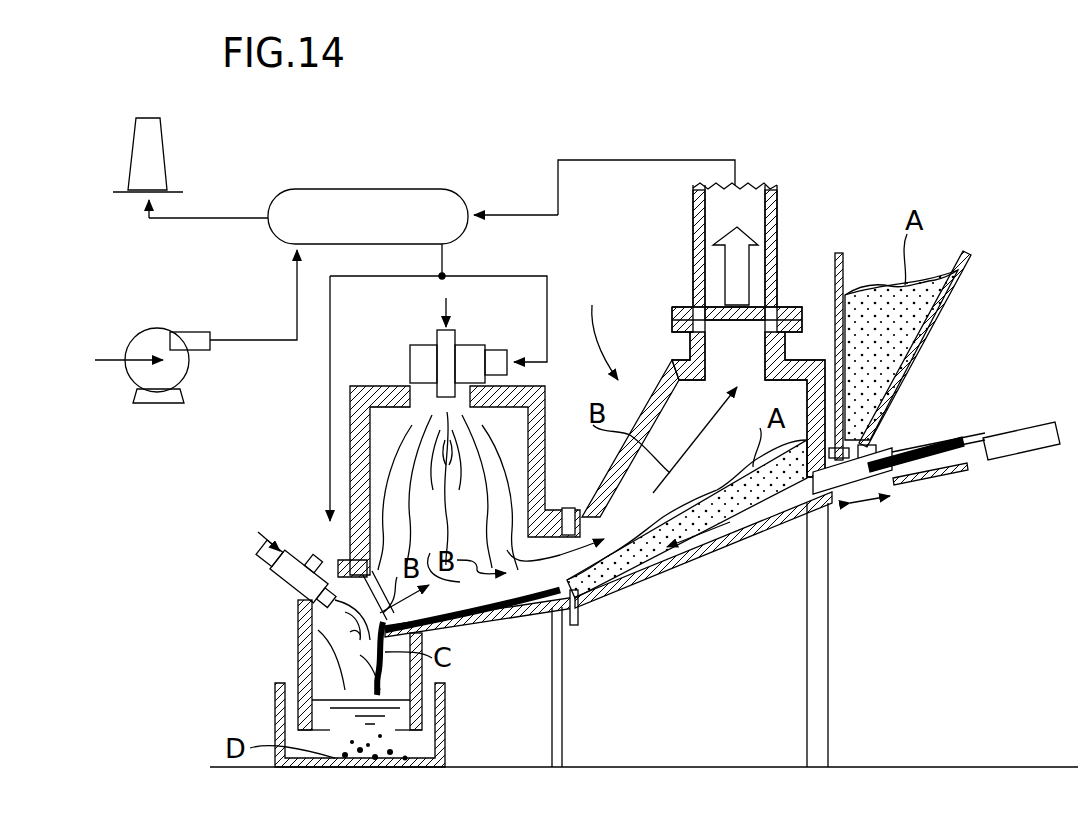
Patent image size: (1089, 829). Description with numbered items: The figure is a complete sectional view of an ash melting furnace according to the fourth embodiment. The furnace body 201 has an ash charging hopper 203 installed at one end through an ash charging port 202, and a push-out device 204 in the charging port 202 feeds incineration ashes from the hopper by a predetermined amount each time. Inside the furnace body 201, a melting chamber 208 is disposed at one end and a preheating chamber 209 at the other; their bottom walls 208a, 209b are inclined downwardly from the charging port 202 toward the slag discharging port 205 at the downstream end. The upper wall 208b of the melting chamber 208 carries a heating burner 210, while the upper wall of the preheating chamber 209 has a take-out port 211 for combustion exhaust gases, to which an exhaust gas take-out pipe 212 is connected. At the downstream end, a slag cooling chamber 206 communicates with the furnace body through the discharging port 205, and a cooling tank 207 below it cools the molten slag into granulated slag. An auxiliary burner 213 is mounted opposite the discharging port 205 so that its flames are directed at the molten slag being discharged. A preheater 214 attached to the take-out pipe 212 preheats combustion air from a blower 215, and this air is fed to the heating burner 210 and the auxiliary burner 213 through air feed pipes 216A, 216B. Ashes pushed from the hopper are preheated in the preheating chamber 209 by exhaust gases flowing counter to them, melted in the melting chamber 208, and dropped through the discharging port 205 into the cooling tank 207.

The furnace body 201 is at (598, 328).
The ash charging port 202 is at (842, 488).
The ash charging hopper 203 is at (945, 297).
The push-out device 204 is at (930, 455).
The slag discharging port 205 is at (438, 632).
The slag cooling chamber 206 is at (320, 658).
The cooling tank 207 is at (448, 712).
The melting chamber 208 is at (486, 537).
The bottom wall of melting chamber 208a is at (523, 617).
The upper wall of melting chamber 208b is at (385, 390).
The preheating chamber 209 is at (712, 548).
The bottom wall of preheating chamber 209b is at (670, 383).
The heating burner 210 is at (432, 330).
The take-out port 211 is at (740, 345).
The exhaust gas take-out pipe 212 is at (779, 197).
The auxiliary burner 213 is at (278, 587).
The preheater 214 is at (415, 189).
The blower 215 is at (145, 340).
The air feed pipe 216A is at (480, 276).
The air feed pipe 216B is at (330, 393).